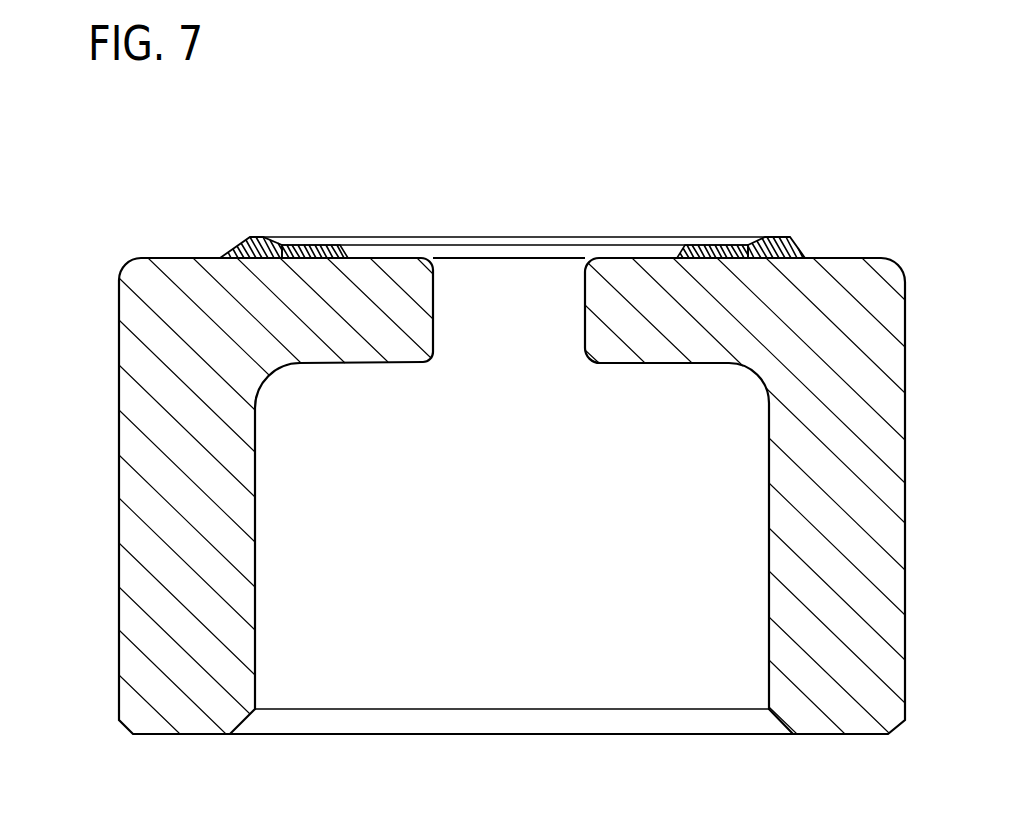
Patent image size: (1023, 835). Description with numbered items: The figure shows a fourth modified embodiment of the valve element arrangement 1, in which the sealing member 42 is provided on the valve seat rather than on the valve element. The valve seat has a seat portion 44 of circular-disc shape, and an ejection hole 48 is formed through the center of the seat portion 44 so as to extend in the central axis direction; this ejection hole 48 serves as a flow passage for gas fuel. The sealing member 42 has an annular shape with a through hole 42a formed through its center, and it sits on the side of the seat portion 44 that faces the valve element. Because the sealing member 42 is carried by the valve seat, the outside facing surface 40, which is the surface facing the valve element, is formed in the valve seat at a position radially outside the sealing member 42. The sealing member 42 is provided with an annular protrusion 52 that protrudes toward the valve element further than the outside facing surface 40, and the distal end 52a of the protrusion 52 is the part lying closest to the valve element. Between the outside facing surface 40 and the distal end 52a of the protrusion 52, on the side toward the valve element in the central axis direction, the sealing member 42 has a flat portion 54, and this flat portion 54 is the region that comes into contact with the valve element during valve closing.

The semiconductor device 1 is at (571, 482).
The outside facing surface 40 is at (847, 258).
The sealing member 42 is at (524, 200).
The through hole 42a is at (515, 256).
The seat portion 44 is at (633, 318).
The ejection hole 48 is at (587, 305).
The protrusion 52 is at (518, 208).
The distal end of the protrusion 52a is at (249, 240).
The flat portion 54 is at (311, 252).